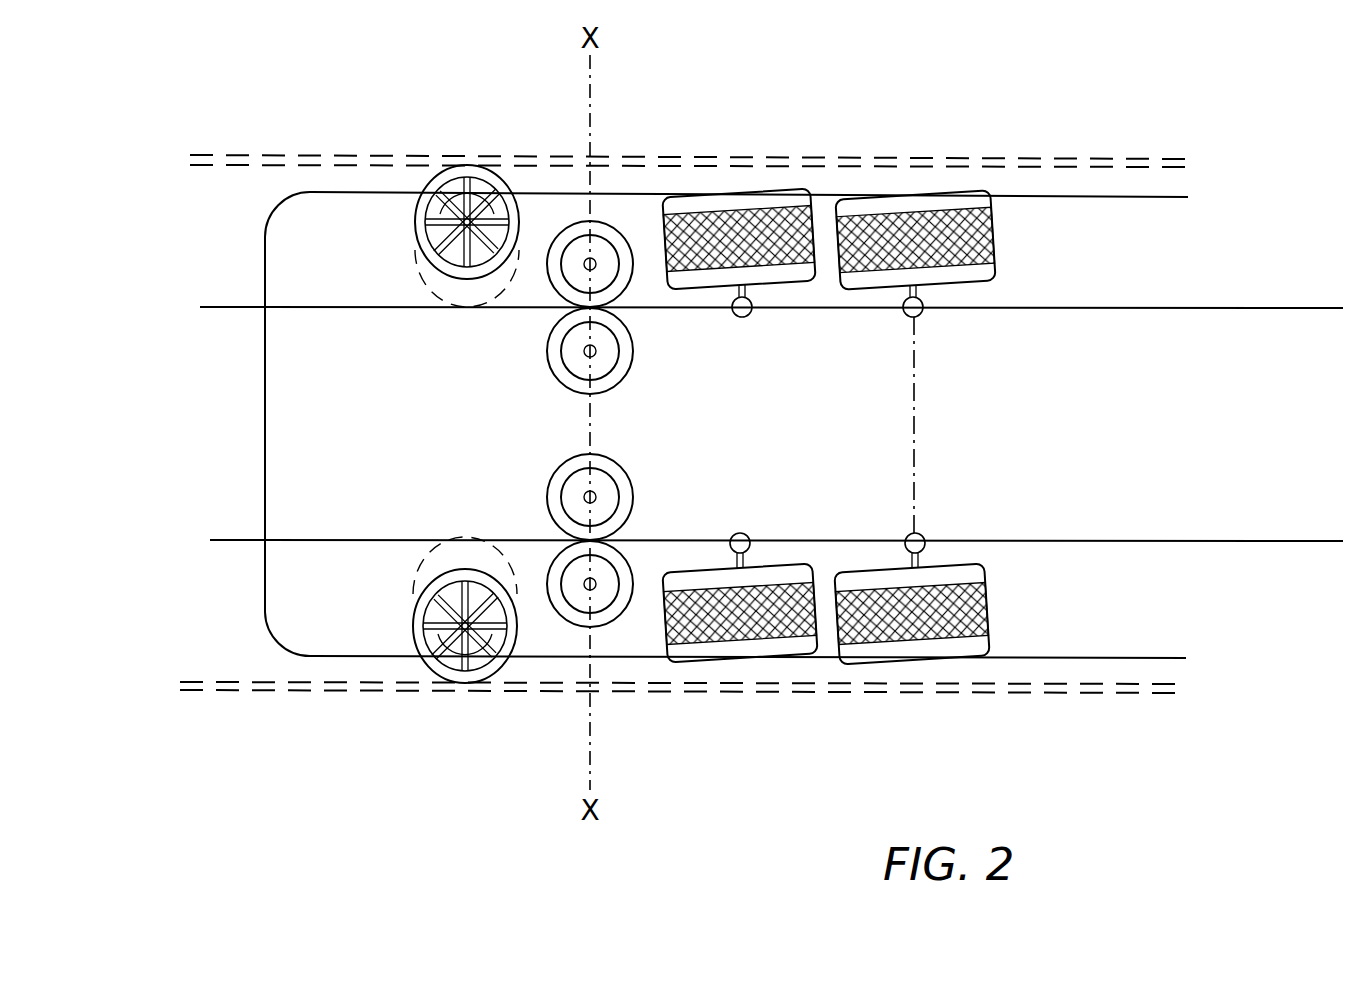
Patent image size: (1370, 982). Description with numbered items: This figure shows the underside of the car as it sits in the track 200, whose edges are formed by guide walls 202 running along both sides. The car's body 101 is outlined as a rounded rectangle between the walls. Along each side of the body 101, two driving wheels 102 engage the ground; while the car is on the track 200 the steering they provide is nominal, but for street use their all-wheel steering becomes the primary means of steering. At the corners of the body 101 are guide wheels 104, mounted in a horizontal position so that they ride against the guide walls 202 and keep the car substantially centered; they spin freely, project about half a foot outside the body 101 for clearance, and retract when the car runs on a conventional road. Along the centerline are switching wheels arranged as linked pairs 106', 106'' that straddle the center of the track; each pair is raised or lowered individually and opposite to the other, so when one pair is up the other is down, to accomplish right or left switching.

The body 101 is at (1045, 625).
The driving wheels 102 is at (920, 200).
The guide wheel 104 is at (498, 185).
The switching wheels 106' is at (667, 540).
The switching wheels 106'' is at (674, 307).
The track 200 is at (241, 619).
The guide walls 202 is at (393, 152).